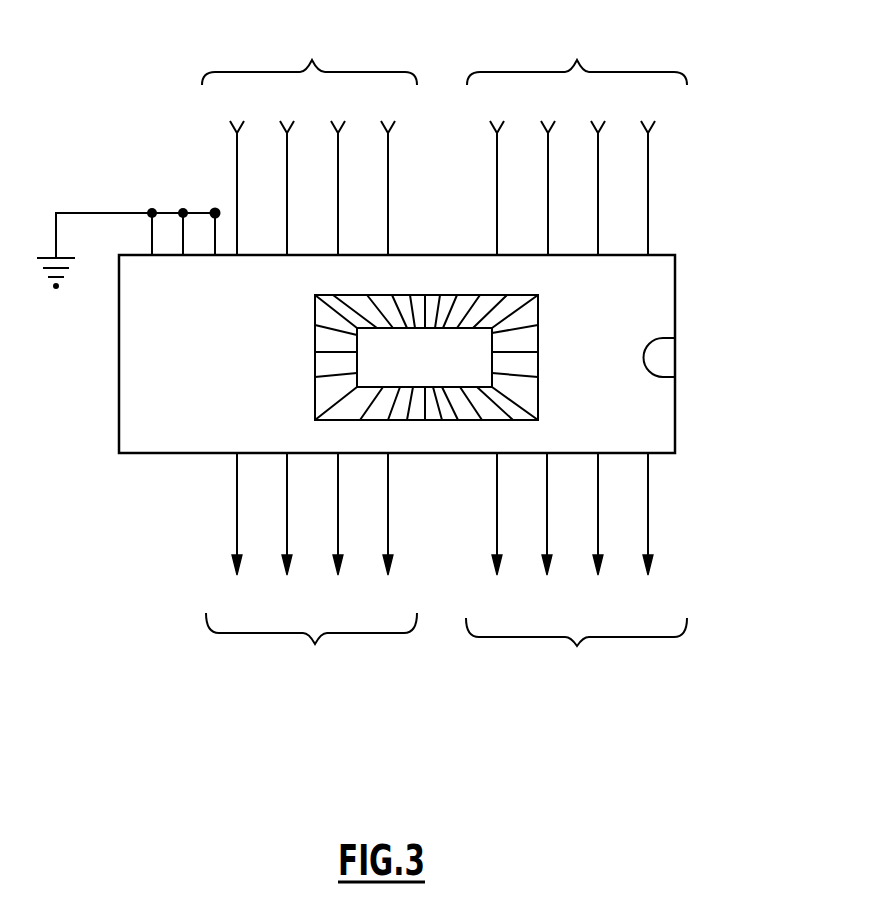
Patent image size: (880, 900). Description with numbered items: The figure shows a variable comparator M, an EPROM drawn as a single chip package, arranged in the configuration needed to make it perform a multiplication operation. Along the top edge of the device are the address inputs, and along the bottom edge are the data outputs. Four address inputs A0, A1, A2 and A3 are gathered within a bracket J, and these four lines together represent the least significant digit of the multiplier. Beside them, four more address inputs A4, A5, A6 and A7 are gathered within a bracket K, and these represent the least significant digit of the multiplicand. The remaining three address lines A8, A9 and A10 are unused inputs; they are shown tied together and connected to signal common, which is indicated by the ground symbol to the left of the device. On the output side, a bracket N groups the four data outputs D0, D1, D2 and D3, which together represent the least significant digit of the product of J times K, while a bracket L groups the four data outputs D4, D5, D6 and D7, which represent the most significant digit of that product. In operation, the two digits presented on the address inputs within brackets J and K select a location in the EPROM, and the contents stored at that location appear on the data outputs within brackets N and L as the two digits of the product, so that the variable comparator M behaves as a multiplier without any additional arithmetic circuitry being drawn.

The address input A0 is at (647, 176).
The address input A1 is at (597, 176).
The address input A2 is at (547, 176).
The address input A3 is at (496, 176).
The address input A4 is at (387, 176).
The address input A5 is at (337, 176).
The address input A6 is at (286, 176).
The address input A7 is at (236, 176).
The address line A8 is at (222, 246).
The address line A9 is at (186, 245).
The address line A10 is at (145, 245).
The data output D0 is at (648, 531).
The data output D1 is at (598, 531).
The data output D2 is at (547, 531).
The data output D3 is at (497, 531).
The data output D4 is at (388, 531).
The data output D5 is at (338, 531).
The data output D6 is at (287, 531).
The data output D7 is at (237, 531).
The bracket J is at (577, 48).
The bracket K is at (309, 49).
The bracket L is at (311, 656).
The variable comparator M is at (685, 365).
The bracket N is at (576, 660).